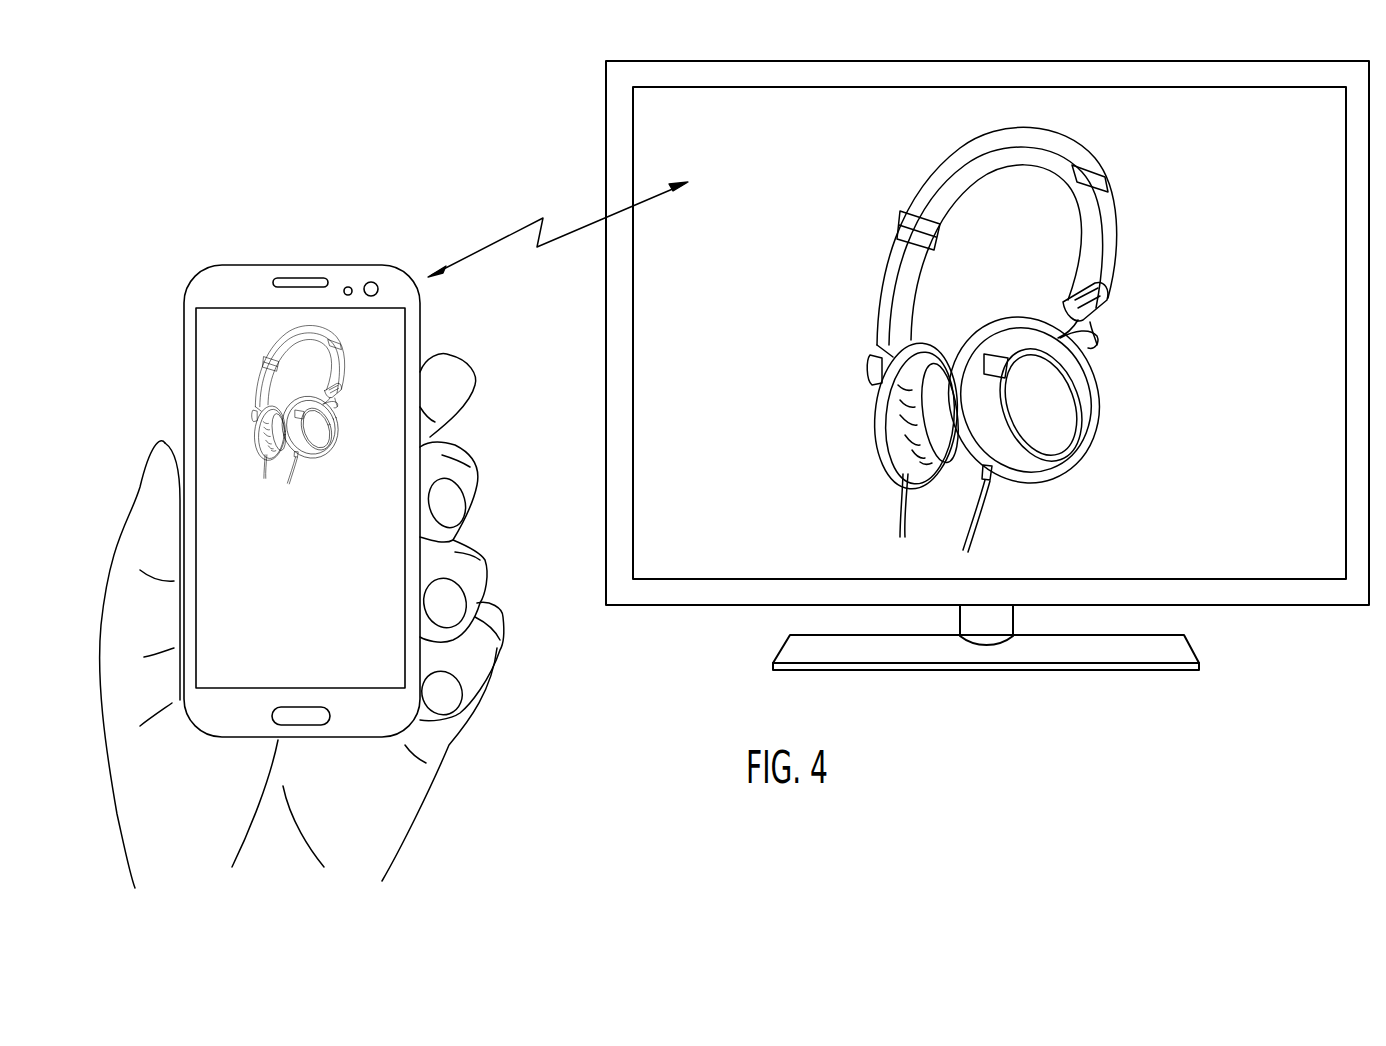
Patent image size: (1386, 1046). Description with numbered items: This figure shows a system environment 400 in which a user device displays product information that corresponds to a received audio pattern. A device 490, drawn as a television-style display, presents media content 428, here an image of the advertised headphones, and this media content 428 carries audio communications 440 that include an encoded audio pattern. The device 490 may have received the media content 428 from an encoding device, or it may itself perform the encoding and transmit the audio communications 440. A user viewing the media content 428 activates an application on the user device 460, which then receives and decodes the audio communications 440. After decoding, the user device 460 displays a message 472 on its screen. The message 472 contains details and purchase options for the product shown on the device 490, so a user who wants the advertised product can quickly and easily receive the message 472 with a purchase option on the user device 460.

The system environment 400 is at (287, 68).
The user device 460 is at (230, 265).
The message 472 is at (382, 673).
The audio communications 440 is at (505, 238).
The device 490 is at (1033, 51).
The media content 428 is at (1281, 147).